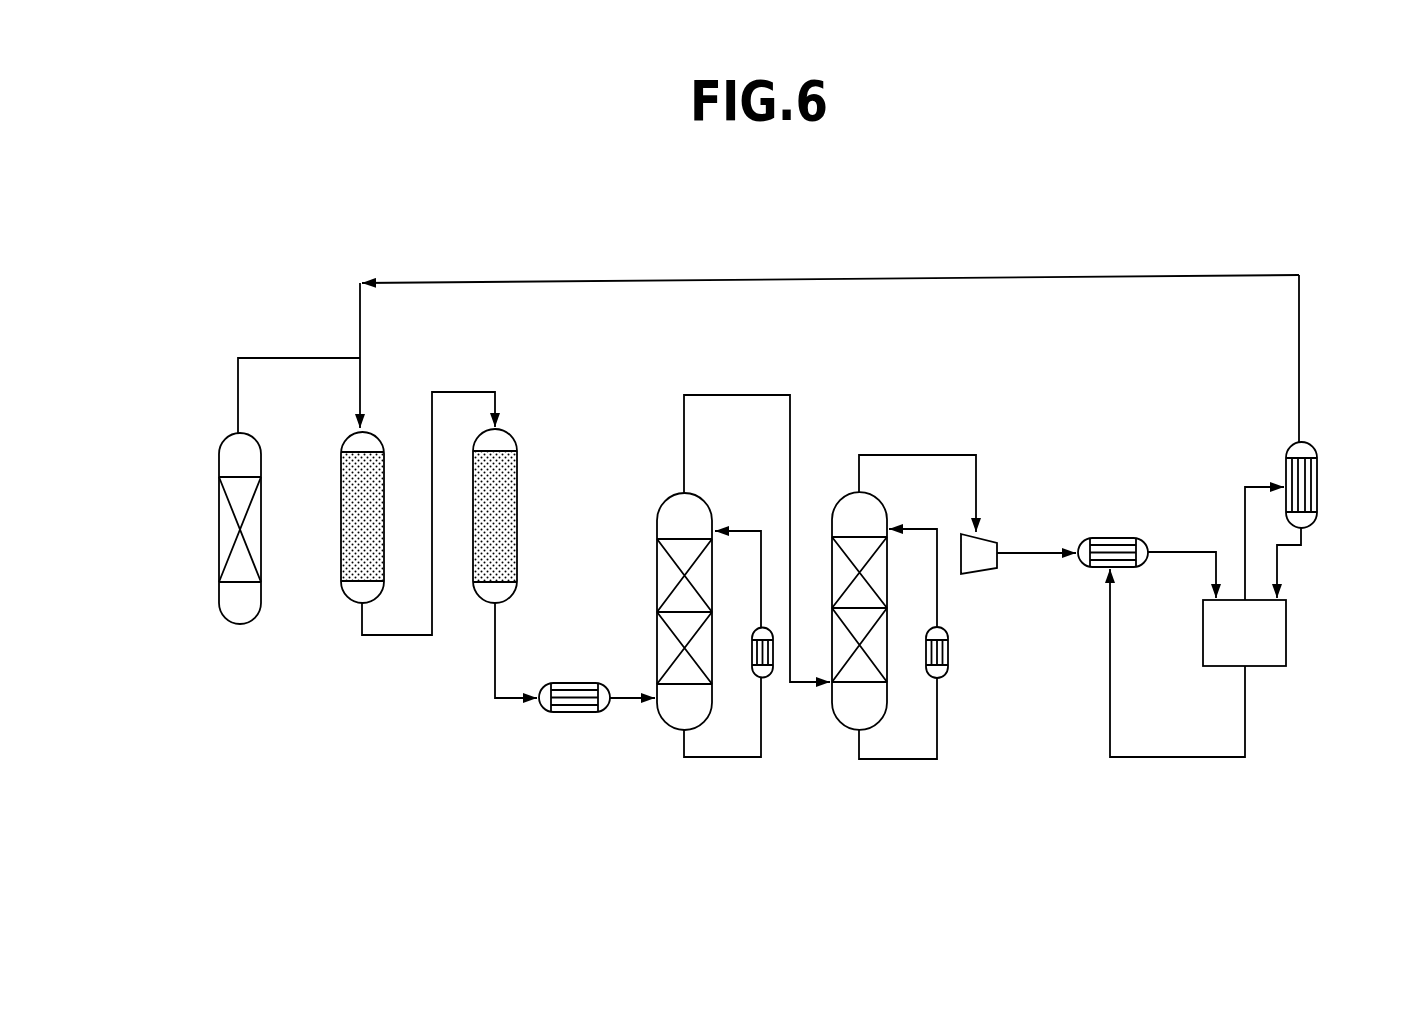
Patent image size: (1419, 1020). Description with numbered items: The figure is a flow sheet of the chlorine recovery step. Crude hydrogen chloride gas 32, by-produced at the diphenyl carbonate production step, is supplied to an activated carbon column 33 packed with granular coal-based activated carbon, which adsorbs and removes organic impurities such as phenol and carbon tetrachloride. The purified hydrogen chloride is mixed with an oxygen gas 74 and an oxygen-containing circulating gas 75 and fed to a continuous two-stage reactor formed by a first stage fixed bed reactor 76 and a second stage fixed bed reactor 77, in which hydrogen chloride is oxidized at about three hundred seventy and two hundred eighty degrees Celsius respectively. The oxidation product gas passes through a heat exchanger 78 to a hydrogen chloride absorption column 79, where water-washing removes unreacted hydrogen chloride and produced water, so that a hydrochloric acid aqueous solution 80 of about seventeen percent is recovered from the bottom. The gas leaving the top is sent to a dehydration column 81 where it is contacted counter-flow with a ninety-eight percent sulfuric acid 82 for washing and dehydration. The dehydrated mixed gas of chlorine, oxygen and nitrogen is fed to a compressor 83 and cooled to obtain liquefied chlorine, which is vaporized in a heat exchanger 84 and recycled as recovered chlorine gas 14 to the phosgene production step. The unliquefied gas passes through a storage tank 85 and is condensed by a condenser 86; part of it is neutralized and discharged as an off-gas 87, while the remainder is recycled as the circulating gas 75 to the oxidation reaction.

The recovered chlorine gas 14 is at (1171, 436).
The crude hydrogen chloride gas 32 is at (177, 659).
The activated carbon column 33 is at (219, 528).
The oxygen gas 74 is at (270, 283).
The oxygen-containing circulating gas 75 is at (830, 264).
The first stage fixed bed reactor 76 is at (383, 517).
The second stage fixed bed reactor 77 is at (516, 516).
The heat exchanger 78 is at (574, 717).
The hydrogen chloride absorption column 79 is at (693, 611).
The hydrochloric acid aqueous solution 80 is at (725, 804).
The dehydration column 81 is at (890, 611).
The sulfuric acid 82 is at (863, 808).
The compressor 83 is at (981, 572).
The heat exchanger 84 is at (1106, 570).
The storage tank 85 is at (1257, 652).
The condenser 86 is at (1323, 485).
The off-gas 87 is at (1348, 274).